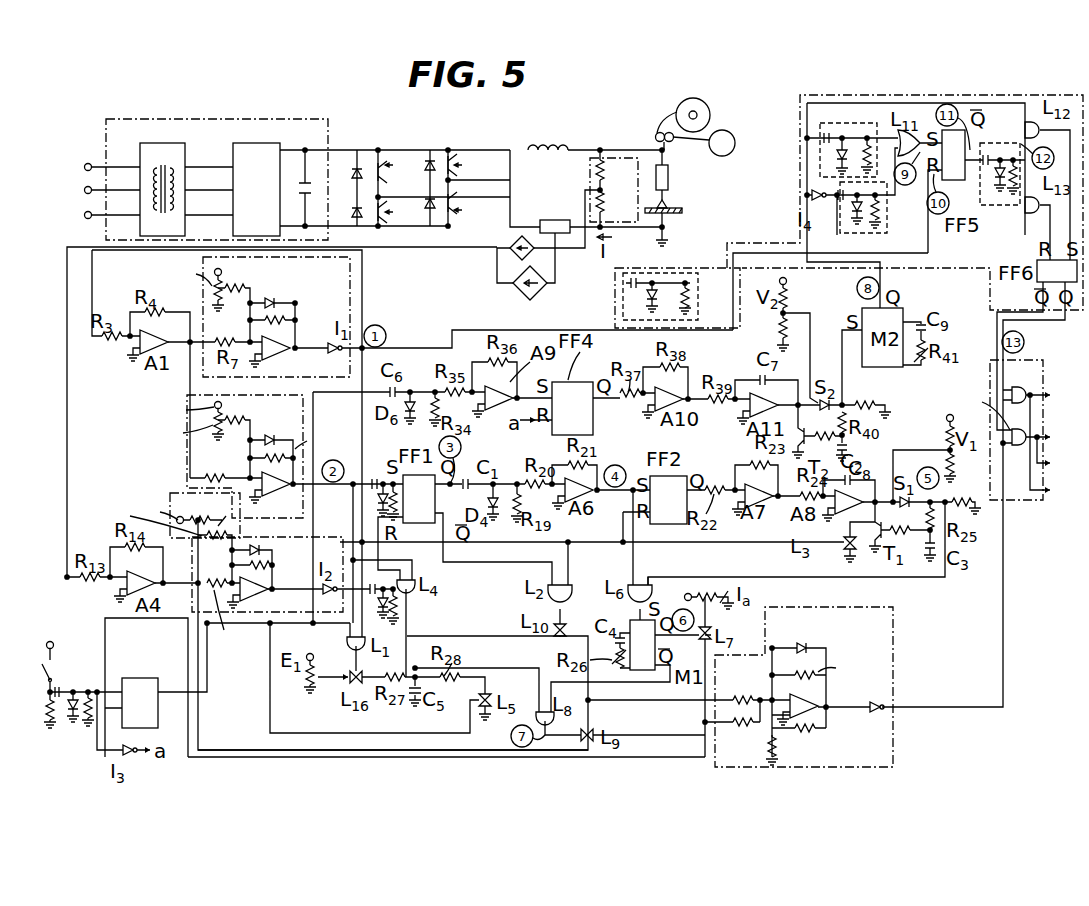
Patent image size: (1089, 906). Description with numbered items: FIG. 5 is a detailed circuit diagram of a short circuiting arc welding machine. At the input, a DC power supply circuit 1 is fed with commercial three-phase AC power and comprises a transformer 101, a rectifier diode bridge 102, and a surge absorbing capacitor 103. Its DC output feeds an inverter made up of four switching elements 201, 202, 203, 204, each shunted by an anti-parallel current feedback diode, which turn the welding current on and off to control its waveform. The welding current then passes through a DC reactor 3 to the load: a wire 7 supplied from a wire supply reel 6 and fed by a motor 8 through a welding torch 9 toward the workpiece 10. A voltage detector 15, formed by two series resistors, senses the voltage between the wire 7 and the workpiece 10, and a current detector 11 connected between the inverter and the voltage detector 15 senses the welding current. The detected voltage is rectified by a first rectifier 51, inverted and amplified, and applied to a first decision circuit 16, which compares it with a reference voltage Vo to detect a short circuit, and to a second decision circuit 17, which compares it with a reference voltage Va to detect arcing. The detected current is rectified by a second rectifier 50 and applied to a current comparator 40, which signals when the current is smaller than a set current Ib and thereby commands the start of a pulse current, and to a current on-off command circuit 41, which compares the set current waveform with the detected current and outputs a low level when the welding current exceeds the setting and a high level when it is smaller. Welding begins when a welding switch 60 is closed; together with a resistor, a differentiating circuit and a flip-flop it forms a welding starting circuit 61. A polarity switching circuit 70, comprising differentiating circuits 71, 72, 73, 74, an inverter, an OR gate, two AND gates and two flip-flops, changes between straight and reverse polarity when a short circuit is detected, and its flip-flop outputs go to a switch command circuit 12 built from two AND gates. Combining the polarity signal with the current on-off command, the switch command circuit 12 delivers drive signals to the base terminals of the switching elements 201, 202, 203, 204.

The DC power supply circuit 1 is at (96, 142).
The transformer 101 is at (188, 153).
The rectifier diode bridge 102 is at (258, 139).
The surge absorbing capacitor 103 is at (314, 176).
The switching element 201 is at (383, 146).
The switching element 202 is at (380, 232).
The switching element 203 is at (454, 146).
The switching element 204 is at (447, 232).
The DC reactor 3 is at (556, 145).
The wire supply reel 6 is at (712, 107).
The wire 7 is at (669, 206).
The motor 8 is at (735, 141).
The welding torch 9 is at (668, 170).
The workpiece 10 is at (682, 210).
The current detector 11 is at (560, 220).
The voltage detector 15 is at (632, 237).
The first decision circuit 16 is at (350, 268).
The second decision circuit 17 is at (168, 467).
The current comparator 40 is at (170, 491).
The current on-off command circuit 41 is at (904, 638).
The second rectifier 50 is at (535, 288).
The first rectifier 51 is at (534, 254).
The welding switch 60 is at (52, 660).
The welding starting circuit 61 is at (162, 659).
The polarity switching circuit 70 is at (928, 95).
The differentiating circuit 71 is at (693, 284).
The differentiating circuit 72 is at (820, 130).
The differentiating circuit 73 is at (881, 200).
The differentiating circuit 74 is at (995, 144).
The switch command circuit 12 is at (1034, 521).